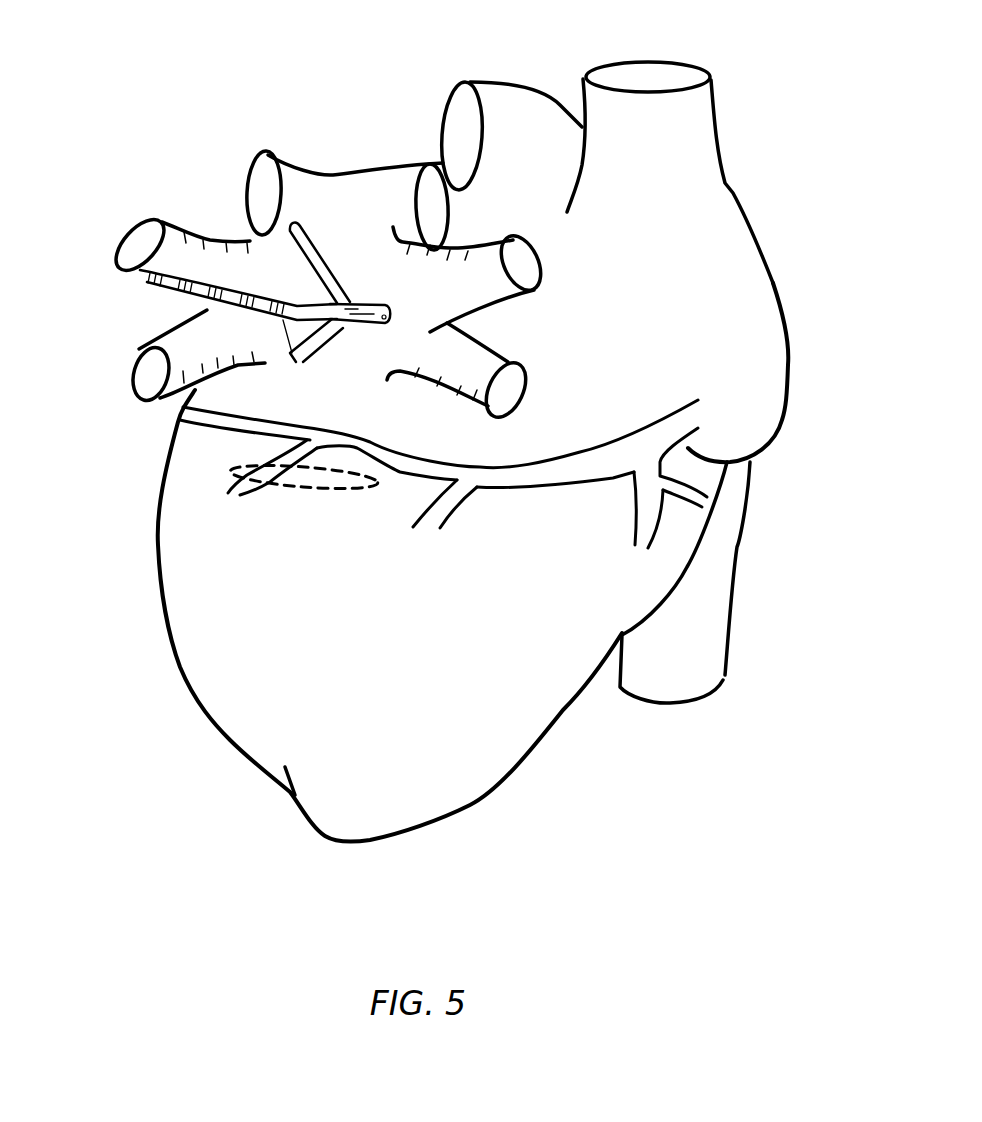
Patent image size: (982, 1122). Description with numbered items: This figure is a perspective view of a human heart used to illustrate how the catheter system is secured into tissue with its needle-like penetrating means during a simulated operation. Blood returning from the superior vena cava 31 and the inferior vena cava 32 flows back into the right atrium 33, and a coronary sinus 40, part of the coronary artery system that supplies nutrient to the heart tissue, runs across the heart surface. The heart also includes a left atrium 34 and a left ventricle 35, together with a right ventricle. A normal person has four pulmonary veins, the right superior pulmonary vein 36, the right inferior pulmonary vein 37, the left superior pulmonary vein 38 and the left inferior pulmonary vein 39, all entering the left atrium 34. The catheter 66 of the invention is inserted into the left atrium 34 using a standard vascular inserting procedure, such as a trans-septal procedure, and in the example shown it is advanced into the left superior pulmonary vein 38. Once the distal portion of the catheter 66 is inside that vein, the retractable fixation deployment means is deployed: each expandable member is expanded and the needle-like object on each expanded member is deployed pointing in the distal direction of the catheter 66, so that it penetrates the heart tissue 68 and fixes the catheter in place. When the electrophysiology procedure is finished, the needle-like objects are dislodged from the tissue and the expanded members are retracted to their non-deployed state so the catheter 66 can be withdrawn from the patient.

The superior vena cava 31 is at (700, 108).
The inferior vena cava 32 is at (727, 635).
The right atrium 33 is at (717, 312).
The left atrium 34 is at (328, 243).
The left ventricle 35 is at (257, 565).
The right superior pulmonary vein 36 is at (467, 248).
The right inferior pulmonary vein 37 is at (490, 353).
The left superior pulmonary vein 38 is at (175, 226).
The left inferior pulmonary vein 39 is at (177, 338).
The coronary sinus 40 is at (692, 420).
The catheter 66 is at (388, 302).
The heart tissue 68 is at (300, 362).